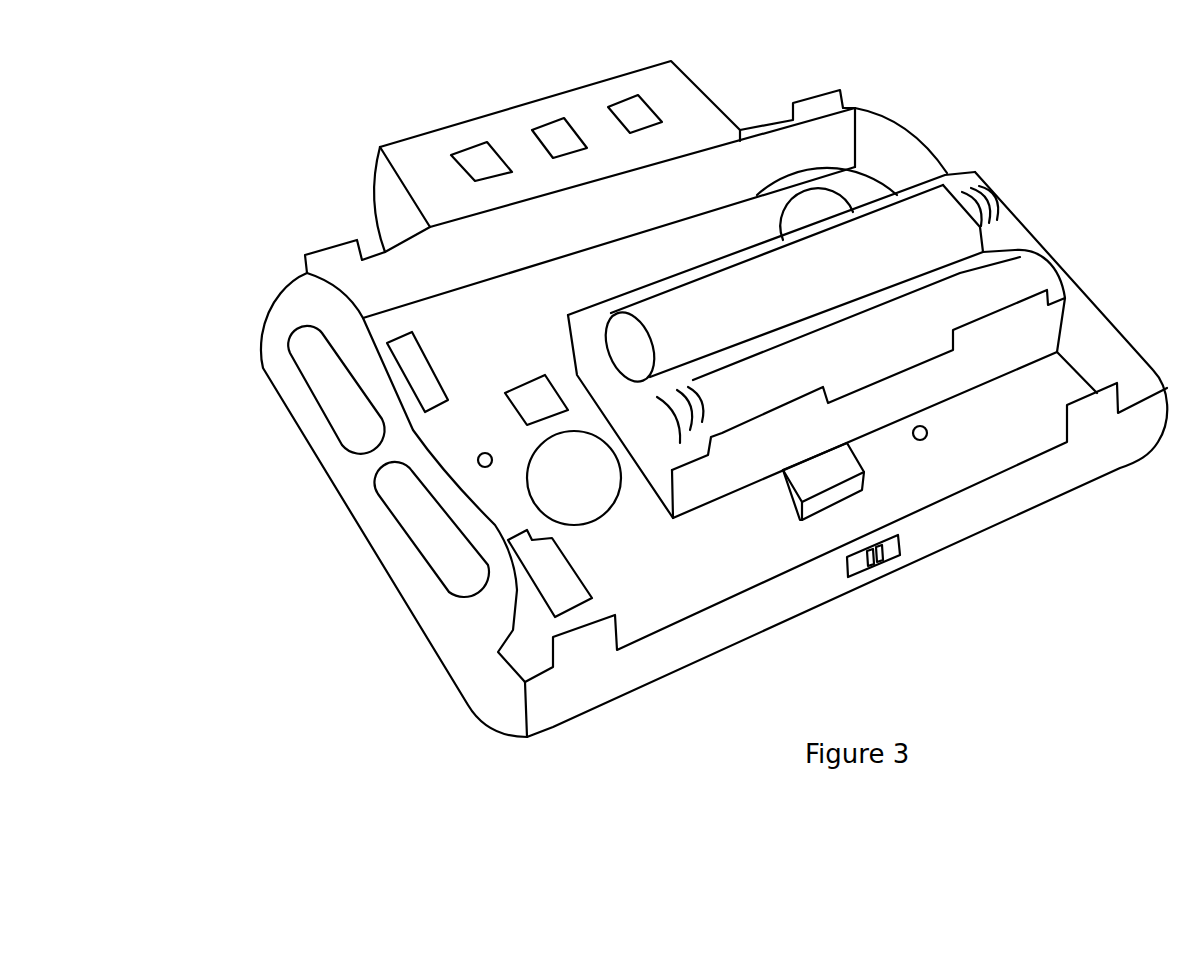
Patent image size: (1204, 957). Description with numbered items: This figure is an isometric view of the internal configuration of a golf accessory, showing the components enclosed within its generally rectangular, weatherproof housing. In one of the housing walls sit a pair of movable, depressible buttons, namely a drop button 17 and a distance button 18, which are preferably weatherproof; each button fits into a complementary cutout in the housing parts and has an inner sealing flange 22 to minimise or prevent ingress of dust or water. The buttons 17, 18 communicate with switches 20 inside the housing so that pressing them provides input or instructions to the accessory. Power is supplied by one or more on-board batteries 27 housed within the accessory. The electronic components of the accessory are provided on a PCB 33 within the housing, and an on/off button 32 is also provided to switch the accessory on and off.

The drop button 17 is at (332, 393).
The distance button 18 is at (432, 540).
The switches 20 is at (413, 358).
The inner sealing flange 22 is at (365, 340).
The on-board batteries 27 is at (930, 228).
The on/off button 32 is at (884, 558).
The PCB 33 is at (913, 483).